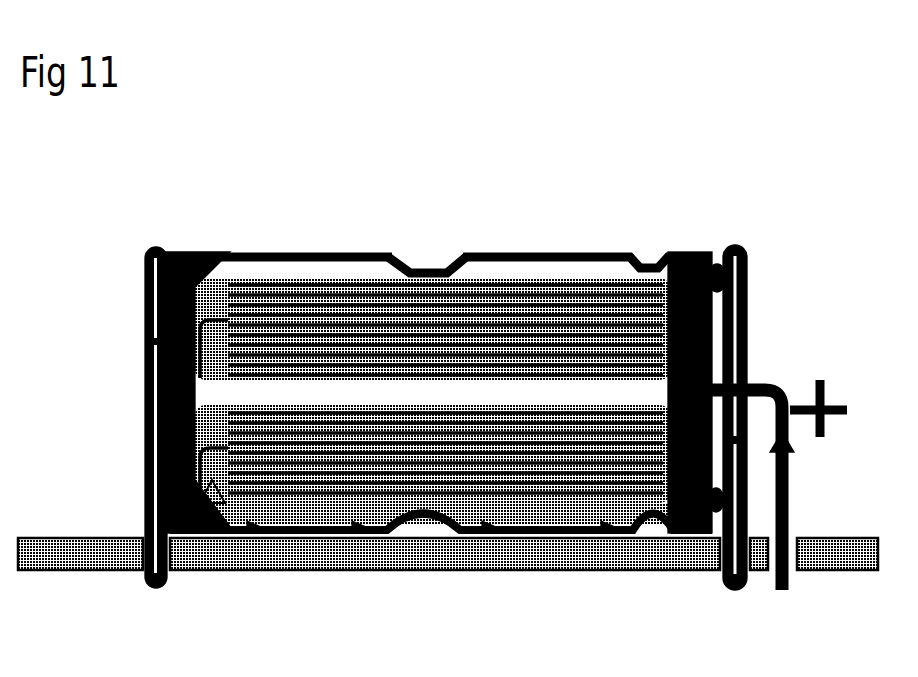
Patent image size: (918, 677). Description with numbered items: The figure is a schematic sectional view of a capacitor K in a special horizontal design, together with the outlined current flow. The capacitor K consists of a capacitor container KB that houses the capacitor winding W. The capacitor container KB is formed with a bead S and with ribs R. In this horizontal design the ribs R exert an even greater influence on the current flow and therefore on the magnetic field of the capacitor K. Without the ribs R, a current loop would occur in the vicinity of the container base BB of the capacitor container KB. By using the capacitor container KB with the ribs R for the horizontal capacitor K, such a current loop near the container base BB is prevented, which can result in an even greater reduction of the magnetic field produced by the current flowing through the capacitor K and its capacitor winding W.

The capacitor K is at (648, 195).
The capacitor container KB is at (505, 253).
The bead S is at (445, 268).
The capacitor winding W is at (352, 300).
The ribs R is at (193, 252).
The container base BB is at (163, 333).